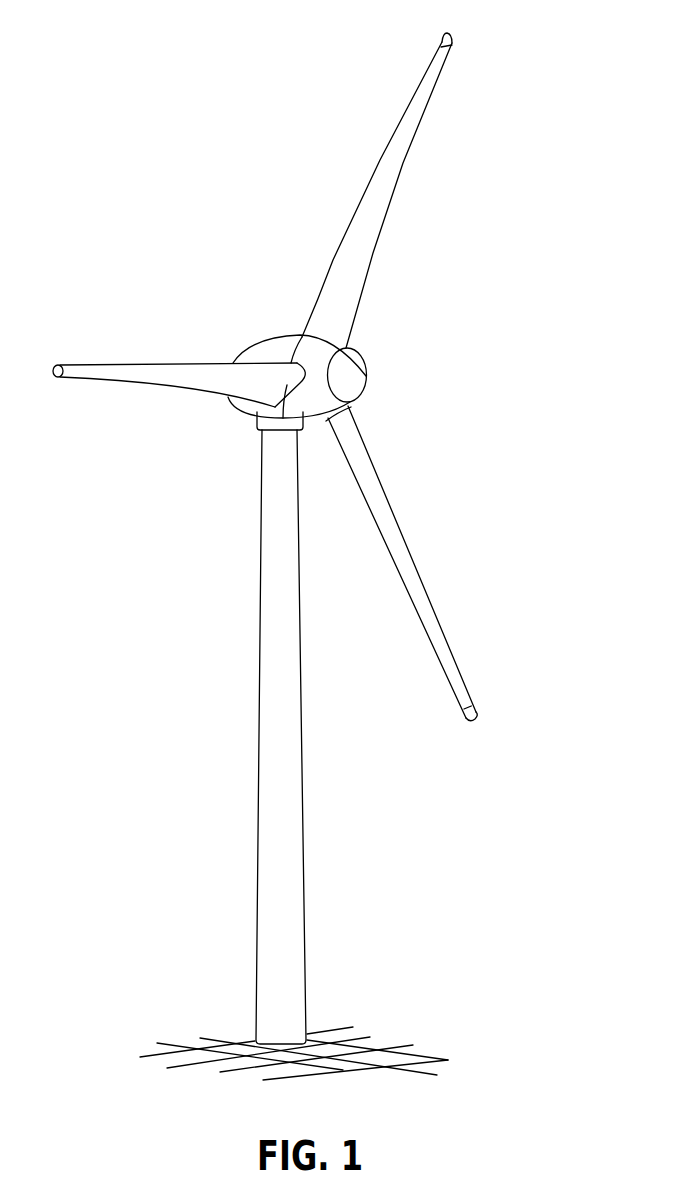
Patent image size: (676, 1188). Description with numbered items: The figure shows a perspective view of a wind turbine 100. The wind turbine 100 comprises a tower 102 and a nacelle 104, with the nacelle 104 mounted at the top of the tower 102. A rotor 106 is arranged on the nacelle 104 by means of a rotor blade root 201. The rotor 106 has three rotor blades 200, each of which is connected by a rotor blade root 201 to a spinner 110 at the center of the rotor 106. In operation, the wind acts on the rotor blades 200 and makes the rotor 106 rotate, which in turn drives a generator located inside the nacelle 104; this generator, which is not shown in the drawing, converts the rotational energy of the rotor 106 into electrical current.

The wind turbine 100 is at (213, 500).
The tower 102 is at (282, 832).
The nacelle 104 is at (272, 353).
The rotor 106 is at (436, 296).
The spinner 110 is at (350, 377).
The rotor blade 200 is at (407, 150).
The rotor blade root 201 is at (384, 419).